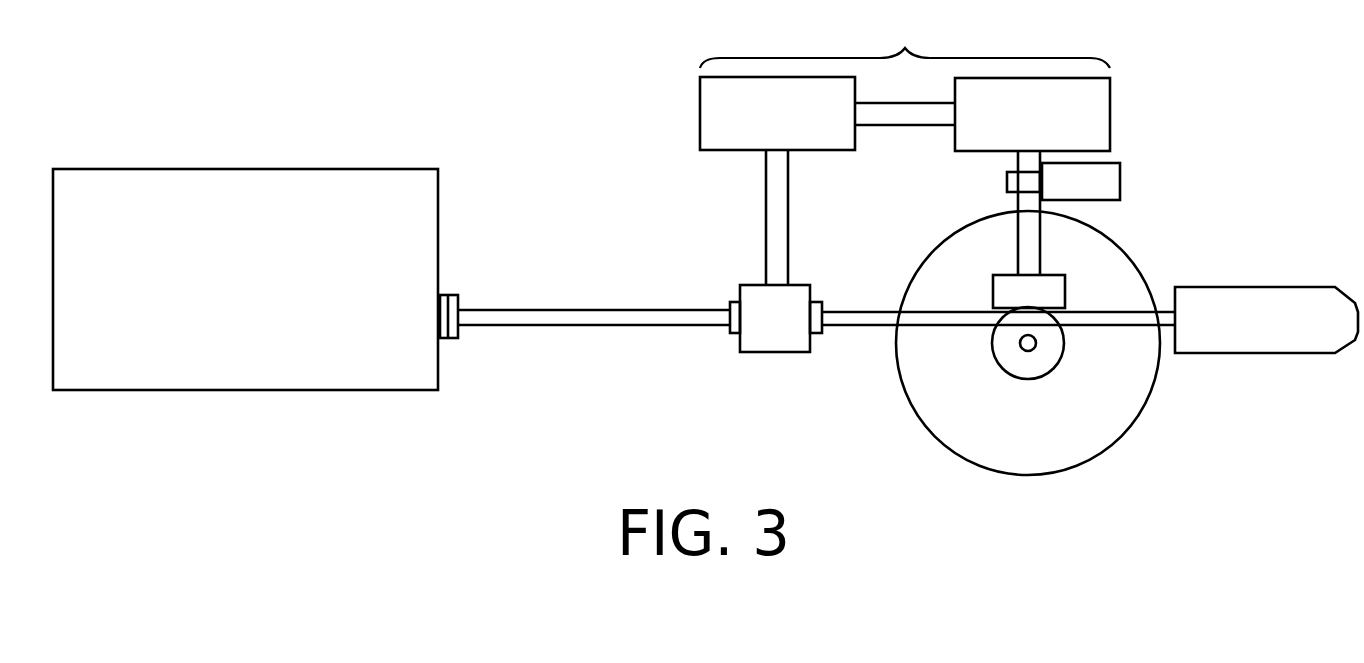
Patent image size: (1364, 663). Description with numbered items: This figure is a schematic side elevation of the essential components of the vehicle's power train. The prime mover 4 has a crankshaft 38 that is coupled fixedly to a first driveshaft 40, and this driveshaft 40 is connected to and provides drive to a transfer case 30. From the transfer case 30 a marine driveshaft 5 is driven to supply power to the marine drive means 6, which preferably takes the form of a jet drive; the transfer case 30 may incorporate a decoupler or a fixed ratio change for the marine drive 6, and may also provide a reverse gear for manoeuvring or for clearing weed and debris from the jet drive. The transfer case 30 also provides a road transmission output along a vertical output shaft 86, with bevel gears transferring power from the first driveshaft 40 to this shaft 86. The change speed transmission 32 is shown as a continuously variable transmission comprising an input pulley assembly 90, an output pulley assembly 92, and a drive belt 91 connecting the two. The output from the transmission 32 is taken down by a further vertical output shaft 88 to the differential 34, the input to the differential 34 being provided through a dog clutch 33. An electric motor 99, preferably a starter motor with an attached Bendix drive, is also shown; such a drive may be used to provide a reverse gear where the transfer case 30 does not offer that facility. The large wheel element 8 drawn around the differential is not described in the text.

The prime mover 4 is at (236, 294).
The crankshaft 38 is at (441, 292).
The first driveshaft 40 is at (592, 325).
The transfer case 30 is at (745, 352).
The marine driveshaft 5 is at (1131, 325).
The marine drive means 6 is at (1246, 332).
The rotor 8 is at (1022, 440).
The differential 34 is at (1007, 353).
The dog clutch 33 is at (1063, 278).
The vertical output shaft 88 is at (1018, 205).
The electric motor 99 is at (1122, 184).
The vertical output shaft 86 is at (766, 243).
The input pulley assembly 90 is at (700, 127).
The drive belt 91 is at (928, 125).
The output pulley assembly 92 is at (1112, 128).
The change speed transmission 32 is at (905, 41).